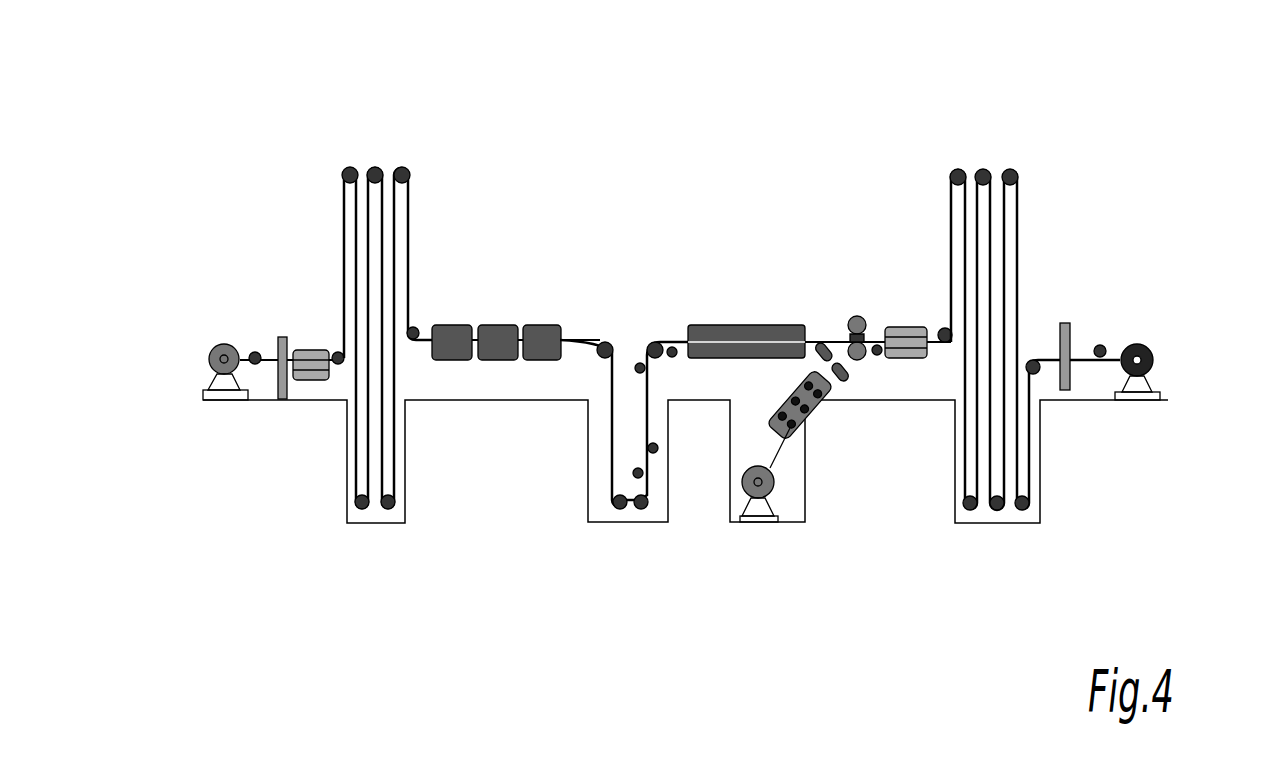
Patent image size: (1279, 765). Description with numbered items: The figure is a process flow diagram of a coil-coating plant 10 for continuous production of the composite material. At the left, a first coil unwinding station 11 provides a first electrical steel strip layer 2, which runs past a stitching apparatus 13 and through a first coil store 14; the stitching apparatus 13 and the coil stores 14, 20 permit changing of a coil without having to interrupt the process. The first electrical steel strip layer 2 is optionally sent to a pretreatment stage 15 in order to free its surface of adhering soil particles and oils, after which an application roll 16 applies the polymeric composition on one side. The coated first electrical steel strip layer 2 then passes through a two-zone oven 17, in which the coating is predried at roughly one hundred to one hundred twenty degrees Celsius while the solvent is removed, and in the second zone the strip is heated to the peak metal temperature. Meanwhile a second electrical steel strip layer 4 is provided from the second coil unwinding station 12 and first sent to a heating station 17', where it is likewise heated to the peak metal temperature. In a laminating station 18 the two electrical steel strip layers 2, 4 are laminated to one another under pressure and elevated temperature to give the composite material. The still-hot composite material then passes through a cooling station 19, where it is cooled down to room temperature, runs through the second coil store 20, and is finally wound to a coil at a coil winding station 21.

The first electrical steel strip layer 2 is at (210, 358).
The second electrical steel strip layer 4 is at (787, 483).
The coil-coating plant 10 is at (213, 138).
The first coil unwinding station 11 is at (205, 316).
The second coil unwinding station 12 is at (770, 565).
The stitching apparatus 13 is at (304, 348).
The first coil store 14 is at (405, 148).
The pretreatment stage 15 is at (488, 298).
The application roll 16 is at (673, 355).
The 2-zone oven 17 is at (786, 224).
The heating station 17' is at (894, 502).
The laminating station 18 is at (832, 300).
The cooling station 19 is at (920, 322).
The second coil store 20 is at (1043, 232).
The coil winding station 21 is at (1150, 318).